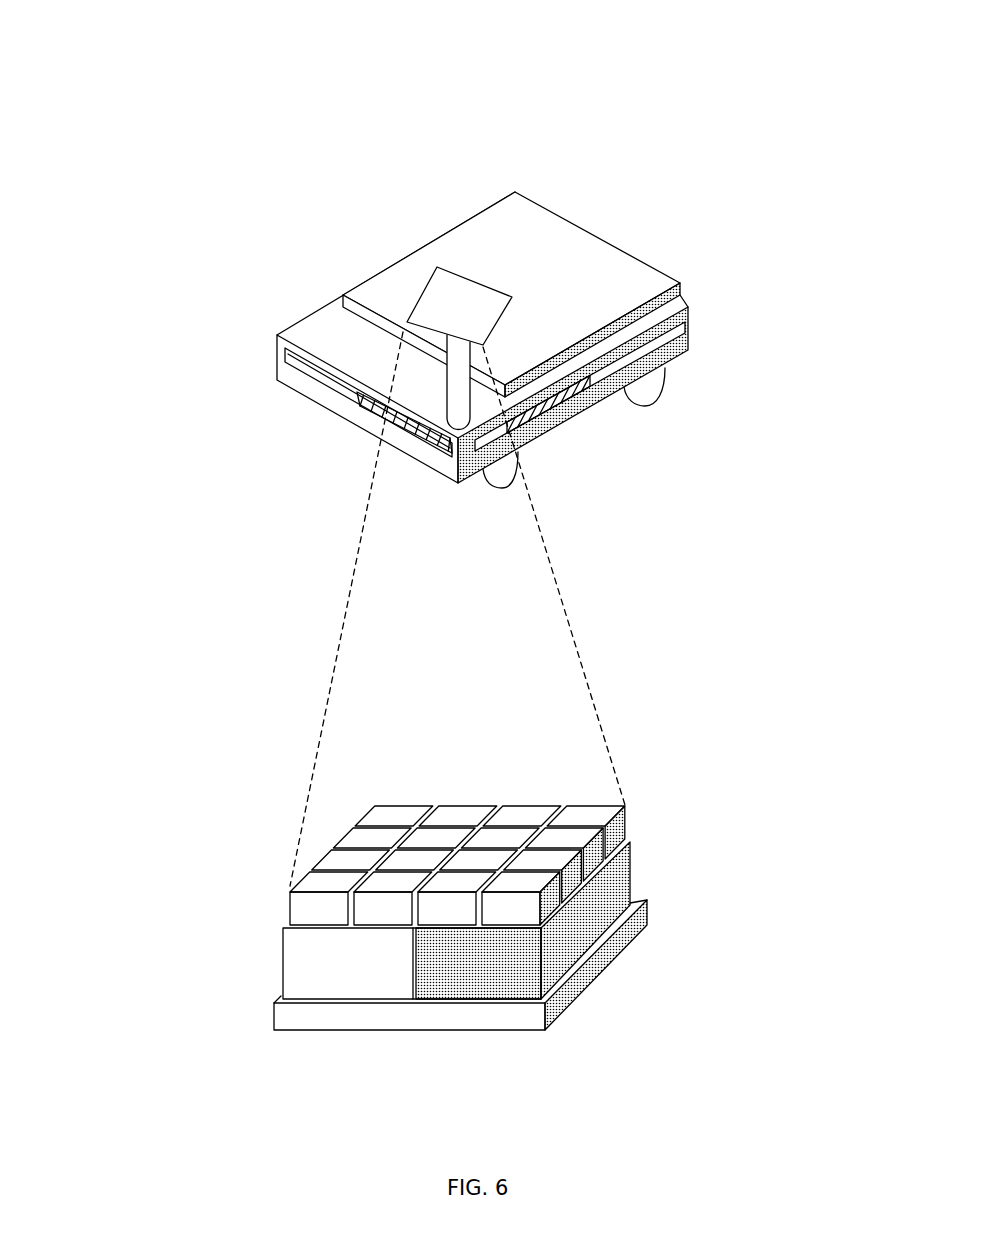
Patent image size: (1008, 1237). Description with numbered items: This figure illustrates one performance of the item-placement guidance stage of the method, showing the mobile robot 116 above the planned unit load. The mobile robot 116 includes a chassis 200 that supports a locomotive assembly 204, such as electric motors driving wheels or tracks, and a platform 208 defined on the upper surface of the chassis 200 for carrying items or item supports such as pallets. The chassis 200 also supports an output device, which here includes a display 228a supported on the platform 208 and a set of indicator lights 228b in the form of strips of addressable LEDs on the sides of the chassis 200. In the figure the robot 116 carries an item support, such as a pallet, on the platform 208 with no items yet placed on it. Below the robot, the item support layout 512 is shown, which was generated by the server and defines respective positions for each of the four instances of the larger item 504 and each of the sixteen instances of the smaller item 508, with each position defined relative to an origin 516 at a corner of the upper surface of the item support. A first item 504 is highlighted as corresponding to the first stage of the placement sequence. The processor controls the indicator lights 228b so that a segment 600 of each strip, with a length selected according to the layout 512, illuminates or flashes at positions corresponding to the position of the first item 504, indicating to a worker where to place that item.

The mobile robot 116 is at (308, 112).
The chassis 200 is at (496, 374).
The locomotive assembly 204 is at (662, 392).
The platform 208 is at (496, 382).
The display 228a is at (432, 305).
The indicator lights 228b is at (548, 447).
The segment 600 is at (402, 423).
The item 504 is at (523, 977).
The item 508 is at (622, 828).
The item support layout 512 is at (411, 931).
The origin 516 is at (273, 1005).